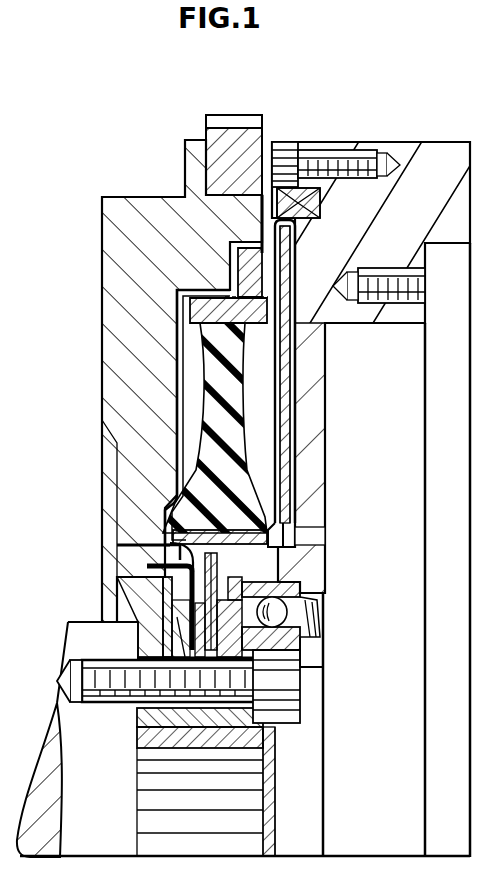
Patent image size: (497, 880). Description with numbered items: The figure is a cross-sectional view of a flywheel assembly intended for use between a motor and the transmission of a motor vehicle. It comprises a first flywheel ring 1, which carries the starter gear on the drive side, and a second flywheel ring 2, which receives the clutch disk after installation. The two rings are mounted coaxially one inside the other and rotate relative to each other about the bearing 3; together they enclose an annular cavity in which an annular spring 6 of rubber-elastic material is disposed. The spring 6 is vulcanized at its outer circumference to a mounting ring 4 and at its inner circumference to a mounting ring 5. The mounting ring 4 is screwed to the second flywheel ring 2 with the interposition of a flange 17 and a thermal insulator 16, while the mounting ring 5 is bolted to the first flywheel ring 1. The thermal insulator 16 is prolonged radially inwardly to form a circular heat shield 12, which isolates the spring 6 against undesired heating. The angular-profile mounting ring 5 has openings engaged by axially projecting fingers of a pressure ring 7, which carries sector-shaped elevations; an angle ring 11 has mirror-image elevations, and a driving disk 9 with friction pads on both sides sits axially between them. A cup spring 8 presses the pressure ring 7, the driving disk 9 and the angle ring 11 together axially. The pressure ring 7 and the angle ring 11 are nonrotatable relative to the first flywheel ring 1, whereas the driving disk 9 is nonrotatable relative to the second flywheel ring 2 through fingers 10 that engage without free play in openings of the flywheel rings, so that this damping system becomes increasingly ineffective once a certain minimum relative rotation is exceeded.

The first flywheel ring 1 is at (133, 195).
The second flywheel ring 2 is at (418, 143).
The bearing 3 is at (291, 610).
The mounting ring 4 is at (200, 321).
The mounting ring 5 is at (170, 607).
The spring 6 is at (208, 407).
The pressure ring 7 is at (136, 618).
The cup spring 8 is at (178, 641).
The driving disk 9 is at (192, 612).
The fingers 10 is at (217, 565).
The angle ring 11 is at (236, 665).
The heat shield 12 is at (279, 380).
The thermal insulator 16 is at (316, 208).
The flange 17 is at (280, 200).